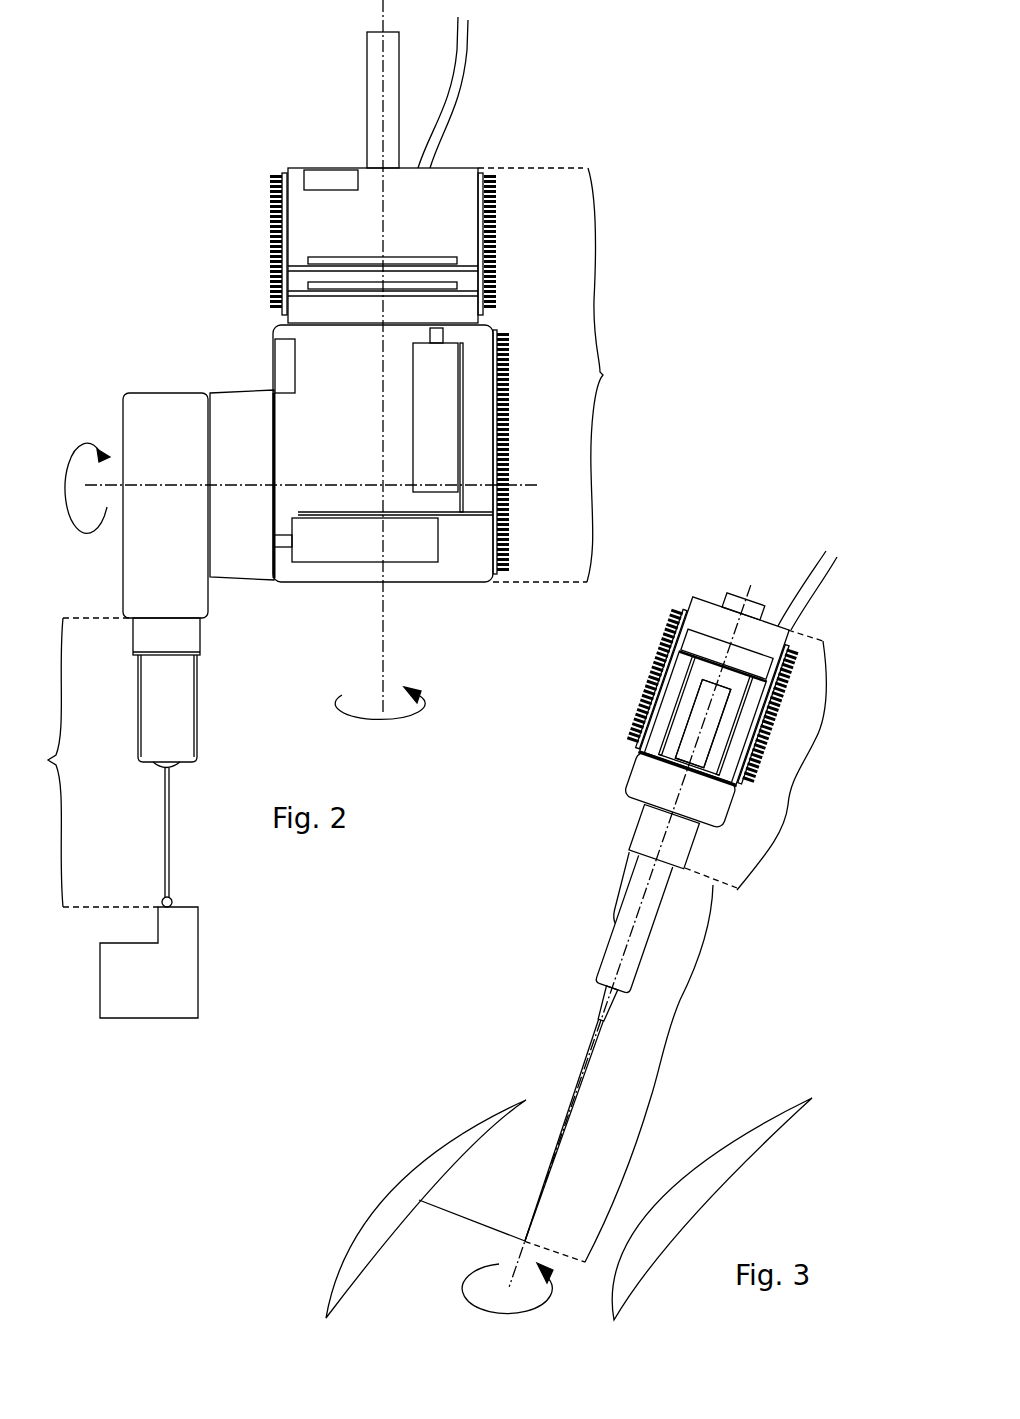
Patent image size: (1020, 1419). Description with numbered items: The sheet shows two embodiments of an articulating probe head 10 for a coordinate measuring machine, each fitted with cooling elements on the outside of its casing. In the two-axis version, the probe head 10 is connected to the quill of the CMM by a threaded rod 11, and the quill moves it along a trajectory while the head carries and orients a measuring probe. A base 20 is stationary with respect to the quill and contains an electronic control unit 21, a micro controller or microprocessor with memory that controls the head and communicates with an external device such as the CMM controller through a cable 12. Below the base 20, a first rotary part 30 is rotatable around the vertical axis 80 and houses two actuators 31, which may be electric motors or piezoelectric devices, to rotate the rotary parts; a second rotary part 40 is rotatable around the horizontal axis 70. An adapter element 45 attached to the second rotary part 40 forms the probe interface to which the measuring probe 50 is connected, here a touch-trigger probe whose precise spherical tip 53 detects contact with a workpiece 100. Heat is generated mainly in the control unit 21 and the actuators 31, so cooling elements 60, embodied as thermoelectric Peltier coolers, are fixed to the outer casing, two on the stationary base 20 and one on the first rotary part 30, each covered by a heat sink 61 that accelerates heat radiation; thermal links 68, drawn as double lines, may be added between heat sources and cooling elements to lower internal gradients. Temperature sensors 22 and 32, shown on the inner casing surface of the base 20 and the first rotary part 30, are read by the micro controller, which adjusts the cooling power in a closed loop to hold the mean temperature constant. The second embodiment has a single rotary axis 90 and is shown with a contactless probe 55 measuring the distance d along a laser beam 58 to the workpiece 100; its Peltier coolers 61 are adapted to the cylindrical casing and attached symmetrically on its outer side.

In FIG. 2, the articulating probe head 10 is at (552, 375).
In FIG. 3, the articulating probe head 10 is at (755, 760).
In FIG. 2, the threaded rod 11 is at (375, 57).
In FIG. 2, the cable 12 is at (462, 82).
In FIG. 3, the cable 12 is at (808, 583).
In FIG. 2, the base 20 is at (465, 175).
In FIG. 2, the electronic control unit 21 is at (355, 258).
In FIG. 3, the electronic control unit 21 is at (703, 633).
In FIG. 2, the temperature sensor 22 is at (323, 178).
In FIG. 2, the first rotary part 30 is at (278, 337).
In FIG. 2, the actuator 31 is at (451, 360).
In FIG. 3, the actuator 31 is at (700, 766).
In FIG. 2, the temperature sensor 32 is at (283, 372).
In FIG. 2, the second rotary part 40 is at (222, 405).
In FIG. 3, the second rotary part 40 is at (645, 835).
In FIG. 2, the adapter element 45 is at (130, 420).
In FIG. 2, the measuring probe 50 is at (110, 762).
In FIG. 2, the spherical tip 53 is at (173, 898).
In FIG. 3, the contactless probe 55 is at (649, 1073).
In FIG. 3, the laser beam 58 is at (481, 1225).
In FIG. 2, the cooling element 60 is at (493, 572).
In FIG. 3, the cooling element 60 is at (633, 750).
In FIG. 2, the heat sink 61 is at (510, 558).
In FIG. 3, the heat sink 61 is at (640, 700).
In FIG. 2, the thermal link 68 is at (465, 400).
In FIG. 2, the horizontal axis 70 is at (73, 488).
In FIG. 2, the vertical axis 80 is at (380, 723).
In FIG. 3, the single rotary axis 90 is at (507, 1300).
In FIG. 2, the workpiece 100 is at (180, 982).
In FIG. 3, the workpiece 100 is at (406, 1193).